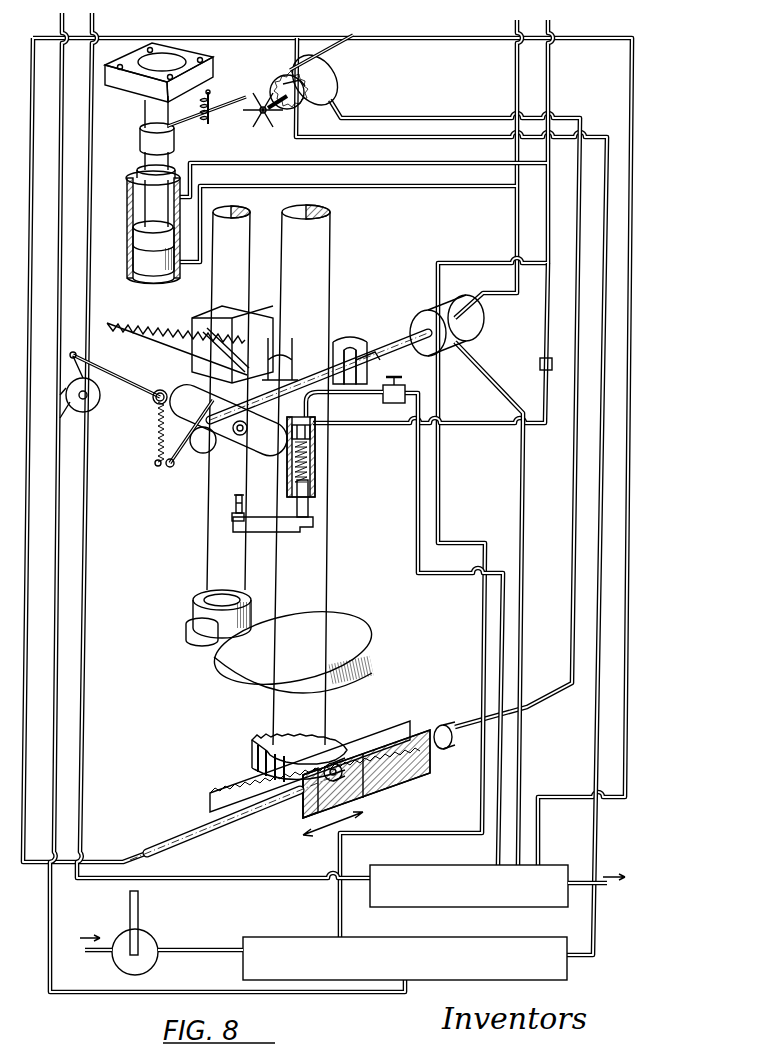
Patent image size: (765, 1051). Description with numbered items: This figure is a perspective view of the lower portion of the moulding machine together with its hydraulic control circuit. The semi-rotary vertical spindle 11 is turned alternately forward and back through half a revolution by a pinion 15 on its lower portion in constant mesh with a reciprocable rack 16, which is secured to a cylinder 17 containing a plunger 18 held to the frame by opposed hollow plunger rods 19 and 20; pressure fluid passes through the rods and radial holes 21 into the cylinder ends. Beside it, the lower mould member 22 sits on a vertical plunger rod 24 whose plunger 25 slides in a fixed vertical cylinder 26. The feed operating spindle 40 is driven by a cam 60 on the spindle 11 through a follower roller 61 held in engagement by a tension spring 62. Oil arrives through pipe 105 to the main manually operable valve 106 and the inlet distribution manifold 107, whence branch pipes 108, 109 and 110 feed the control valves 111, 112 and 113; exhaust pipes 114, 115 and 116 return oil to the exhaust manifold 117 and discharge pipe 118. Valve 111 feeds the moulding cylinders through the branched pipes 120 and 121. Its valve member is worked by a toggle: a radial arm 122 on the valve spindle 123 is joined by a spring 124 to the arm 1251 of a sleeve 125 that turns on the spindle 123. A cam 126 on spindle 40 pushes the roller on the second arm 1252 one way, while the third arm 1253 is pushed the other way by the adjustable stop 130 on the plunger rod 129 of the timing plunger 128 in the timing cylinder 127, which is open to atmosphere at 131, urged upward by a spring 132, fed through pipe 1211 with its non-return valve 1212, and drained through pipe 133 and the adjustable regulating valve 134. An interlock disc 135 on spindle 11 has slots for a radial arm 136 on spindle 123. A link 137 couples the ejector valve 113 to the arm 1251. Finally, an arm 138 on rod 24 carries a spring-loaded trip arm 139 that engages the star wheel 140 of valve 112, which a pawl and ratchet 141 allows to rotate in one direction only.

The semi-rotary vertical spindle 11 is at (320, 245).
The pinion 15 is at (252, 724).
The reciprocable rack 16 is at (382, 728).
The cylinder 17 is at (440, 726).
The plunger 18 is at (350, 745).
The hollow plunger rod 19 is at (262, 820).
The hollow plunger rod 20 is at (466, 724).
The radial holes 21 is at (345, 782).
The lower mould member 22 is at (200, 52).
The vertical plunger rod 24 is at (150, 208).
The plunger 25 is at (135, 238).
The fixed vertical cylinder 26 is at (135, 263).
The feed operating spindle 40 is at (243, 240).
The cam 60 is at (235, 657).
The follower roller 61 is at (186, 640).
The tension spring 62 is at (147, 333).
The pipe 105 is at (92, 953).
The main manually operable valve 106 is at (145, 941).
The inlet distribution manifold 107 is at (405, 958).
The branch pipe 108 is at (438, 508).
The branch pipe 109 is at (444, 140).
The branch pipe 110 is at (57, 628).
The control valve 111 is at (474, 320).
The control valve 112 is at (333, 73).
The control valve 113 is at (112, 405).
The exhaust pipe 114 is at (520, 476).
The exhaust pipe 115 is at (442, 41).
The exhaust pipe 116 is at (86, 690).
The exhaust manifold 117 is at (469, 886).
The discharge pipe 118 is at (604, 886).
The pipe 120 is at (516, 23).
The branched pipe 121 is at (549, 23).
The pipe 1211 is at (474, 436).
The non-return valve 1212 is at (540, 365).
The radial arm 122 is at (188, 440).
The spindle 123 is at (283, 85).
The spring 124 is at (155, 440).
The sleeve 125 is at (200, 400).
The arm 1251 is at (160, 390).
The second arm 1252 is at (284, 336).
The third arm 1253 is at (238, 437).
The cam 126 is at (268, 308).
The timing cylinder 127 is at (316, 450).
The plunger 128 is at (312, 437).
The plunger rod 129 is at (302, 510).
The adjustable stop 130 is at (235, 507).
The opening to atmosphere 131 is at (316, 486).
The spring 132 is at (316, 470).
The pipe 133 is at (352, 394).
The adjustable regulating valve 134 is at (388, 397).
The disc 135 is at (340, 340).
The radial arm 136 is at (352, 346).
The link 137 is at (133, 386).
The laterally projecting arm 138 is at (205, 128).
The spring-loaded trip arm 139 is at (229, 103).
The star wheel 140 is at (258, 130).
The pawl and ratchet 141 is at (296, 66).